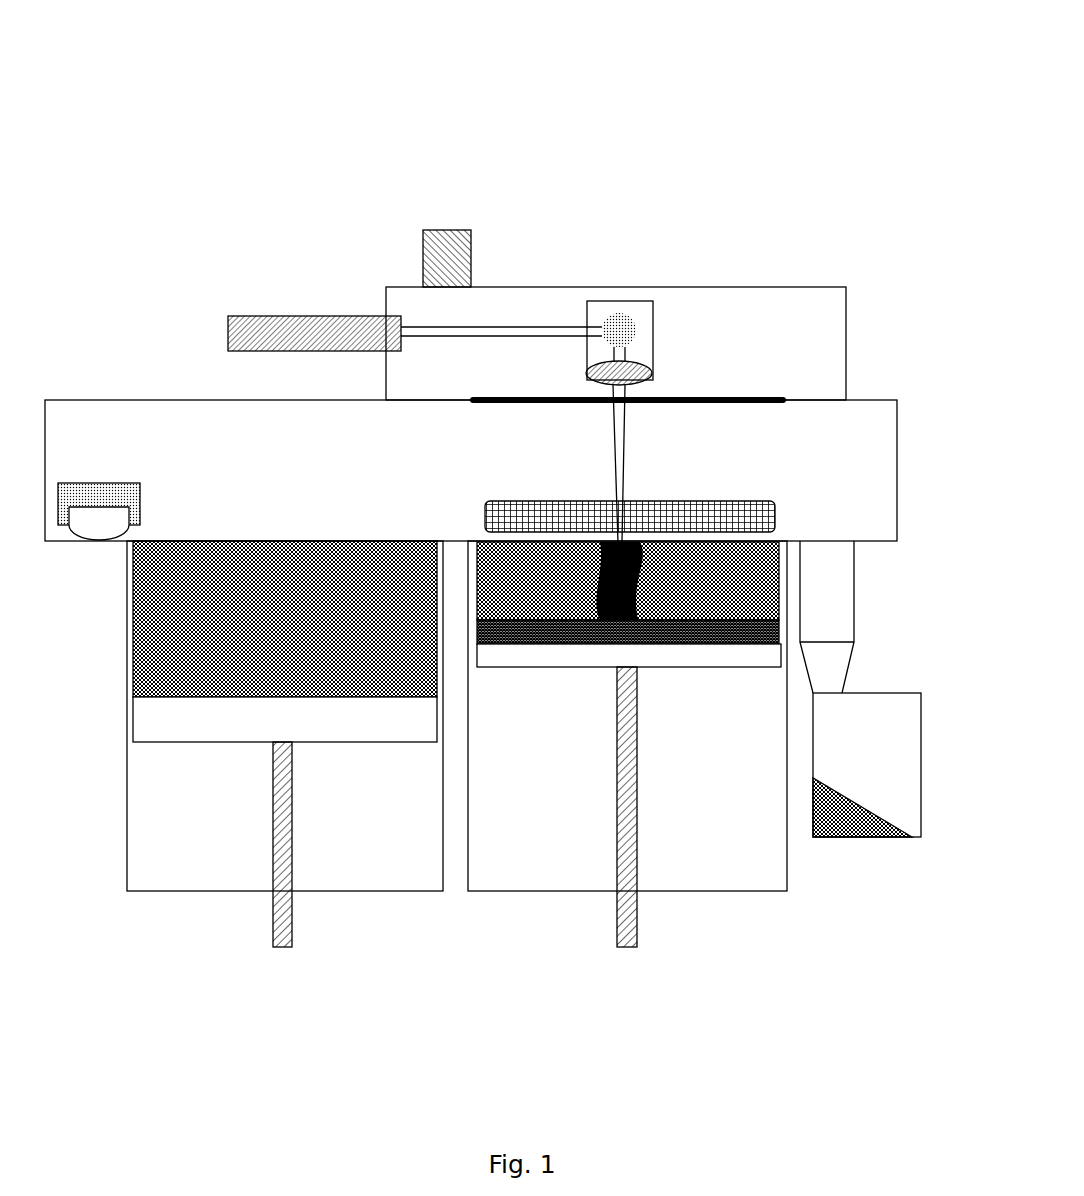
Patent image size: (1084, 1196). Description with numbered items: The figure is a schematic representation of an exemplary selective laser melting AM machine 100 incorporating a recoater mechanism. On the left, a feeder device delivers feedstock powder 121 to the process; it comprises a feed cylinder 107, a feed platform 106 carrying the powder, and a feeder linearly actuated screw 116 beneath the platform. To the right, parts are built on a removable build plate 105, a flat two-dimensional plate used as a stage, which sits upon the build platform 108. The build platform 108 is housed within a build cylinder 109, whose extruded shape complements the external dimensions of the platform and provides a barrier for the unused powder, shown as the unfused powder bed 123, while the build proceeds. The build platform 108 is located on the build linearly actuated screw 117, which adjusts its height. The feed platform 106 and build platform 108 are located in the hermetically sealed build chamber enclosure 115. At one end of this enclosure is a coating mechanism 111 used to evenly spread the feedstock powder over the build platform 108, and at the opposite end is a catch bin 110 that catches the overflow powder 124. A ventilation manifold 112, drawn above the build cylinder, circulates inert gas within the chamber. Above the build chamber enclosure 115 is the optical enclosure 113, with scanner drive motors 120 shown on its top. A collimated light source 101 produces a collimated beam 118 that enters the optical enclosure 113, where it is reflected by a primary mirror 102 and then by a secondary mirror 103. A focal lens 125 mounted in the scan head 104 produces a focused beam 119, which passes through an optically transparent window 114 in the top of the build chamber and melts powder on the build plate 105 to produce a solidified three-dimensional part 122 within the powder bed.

The AM machine 100 is at (560, 133).
The collimated light source 101 is at (314, 315).
The primary mirror 102 is at (608, 299).
The secondary mirror 103 is at (634, 321).
The scan head 104 is at (659, 351).
The removable build plate 105 is at (712, 646).
The feed platform 106 is at (321, 743).
The feed cylinder 107 is at (129, 824).
The build platform 108 is at (515, 669).
The build cylinder 109 is at (473, 820).
The catch bin 110 is at (866, 692).
The coating mechanism 111 is at (109, 475).
The ventilation manifold 112 is at (771, 498).
The optical enclosure 113 is at (848, 283).
The optically transparent window 114 is at (515, 406).
The build chamber enclosure 115 is at (132, 399).
The feeder linearly actuated screw 116 is at (294, 905).
The build linearly actuated screw 117 is at (641, 905).
The collimated beam 118 is at (498, 339).
The focused beam 119 is at (630, 448).
The scanner drive motors 120 is at (422, 243).
The feedstock powder 121 is at (310, 539).
The solidified 3D part 122 is at (590, 575).
The unfused powder bed 123 is at (751, 575).
The overflow powder 124 is at (855, 839).
The focal lens 125 is at (656, 378).